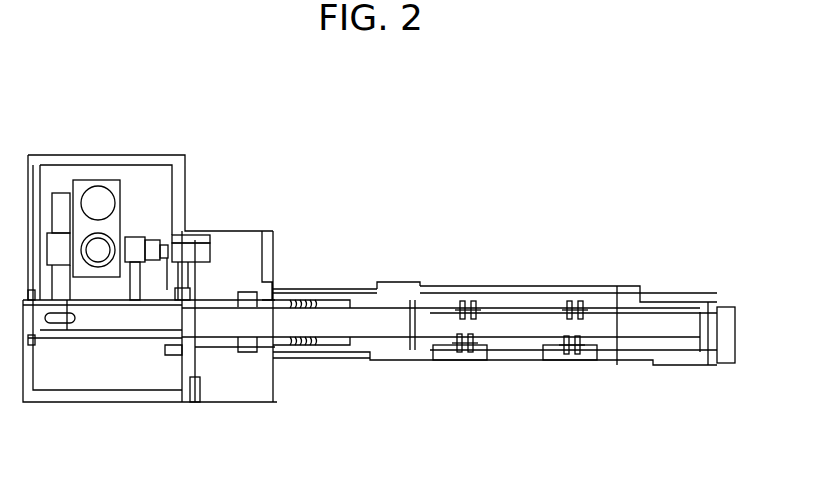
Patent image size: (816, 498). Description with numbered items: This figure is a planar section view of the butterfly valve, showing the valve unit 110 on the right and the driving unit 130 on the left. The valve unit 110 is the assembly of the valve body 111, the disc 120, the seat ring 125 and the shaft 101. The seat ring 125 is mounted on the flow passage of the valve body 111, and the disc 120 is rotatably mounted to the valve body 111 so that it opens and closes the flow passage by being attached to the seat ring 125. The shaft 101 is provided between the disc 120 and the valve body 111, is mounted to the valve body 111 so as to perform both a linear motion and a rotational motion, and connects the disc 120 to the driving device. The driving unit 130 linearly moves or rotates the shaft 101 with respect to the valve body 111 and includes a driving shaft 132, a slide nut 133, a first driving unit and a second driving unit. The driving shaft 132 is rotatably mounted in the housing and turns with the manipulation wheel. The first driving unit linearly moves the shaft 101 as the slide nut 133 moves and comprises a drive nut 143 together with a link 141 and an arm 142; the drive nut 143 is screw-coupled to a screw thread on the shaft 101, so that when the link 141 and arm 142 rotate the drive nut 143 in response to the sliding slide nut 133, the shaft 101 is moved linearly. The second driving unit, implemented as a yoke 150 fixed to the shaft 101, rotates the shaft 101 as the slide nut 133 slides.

The shaft 101 is at (297, 322).
The valve unit 110 is at (627, 255).
The valve body 111 is at (653, 300).
The disc 120 is at (507, 297).
The seat ring 125 is at (402, 289).
The driving unit 130 is at (230, 180).
The driving shaft 132 is at (95, 247).
The slide nut 133 is at (116, 183).
The link 141 is at (134, 272).
The arm 142 is at (155, 287).
The drive nut 143 is at (183, 300).
The yoke 150 is at (65, 288).